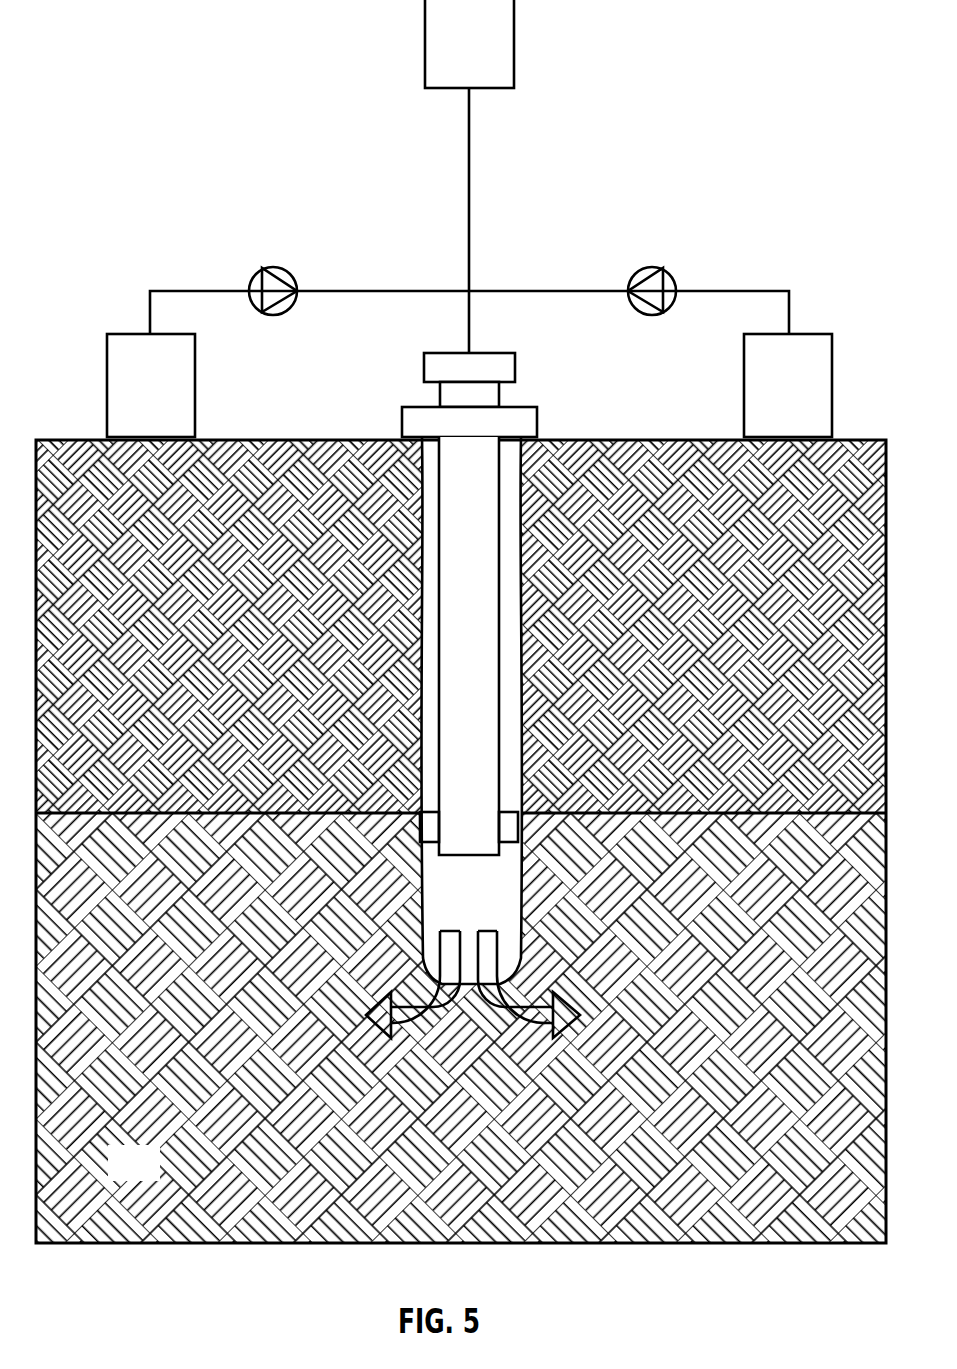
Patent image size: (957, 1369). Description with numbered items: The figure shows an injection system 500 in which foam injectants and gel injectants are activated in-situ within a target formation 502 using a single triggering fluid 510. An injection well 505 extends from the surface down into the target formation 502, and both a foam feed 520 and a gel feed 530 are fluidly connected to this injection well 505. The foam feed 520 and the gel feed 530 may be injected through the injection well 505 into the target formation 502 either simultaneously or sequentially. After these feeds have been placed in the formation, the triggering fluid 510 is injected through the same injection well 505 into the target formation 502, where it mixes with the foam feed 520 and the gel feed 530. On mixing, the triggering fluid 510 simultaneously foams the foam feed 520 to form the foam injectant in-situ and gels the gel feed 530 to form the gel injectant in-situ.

The injection system 500 is at (152, 36).
The target formation 502 is at (112, 1177).
The injection well 505 is at (441, 284).
The triggering fluid 510 is at (447, 53).
The foam feed 520 is at (129, 400).
The gel feed 530 is at (766, 400).